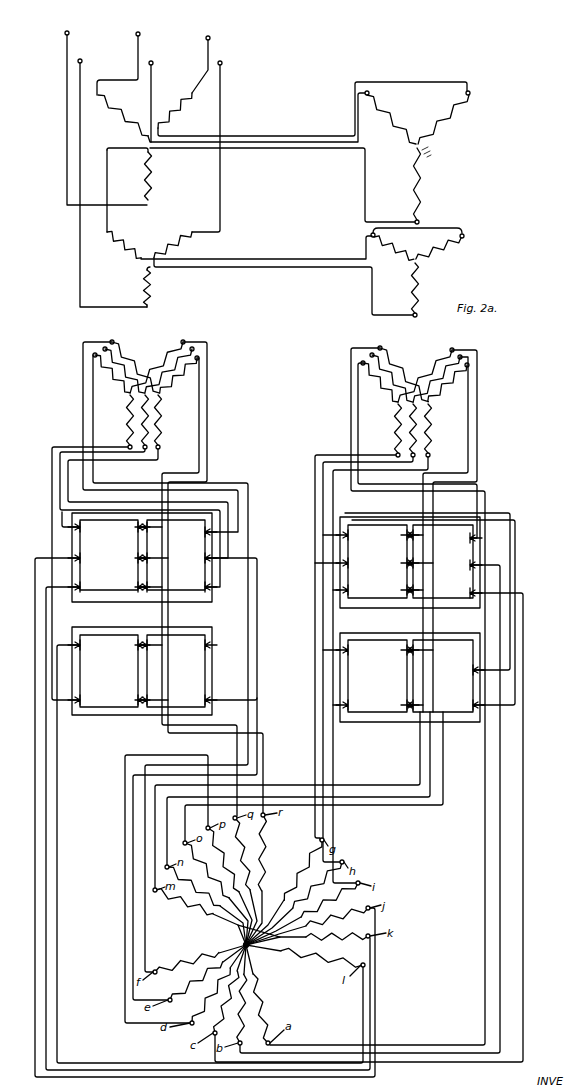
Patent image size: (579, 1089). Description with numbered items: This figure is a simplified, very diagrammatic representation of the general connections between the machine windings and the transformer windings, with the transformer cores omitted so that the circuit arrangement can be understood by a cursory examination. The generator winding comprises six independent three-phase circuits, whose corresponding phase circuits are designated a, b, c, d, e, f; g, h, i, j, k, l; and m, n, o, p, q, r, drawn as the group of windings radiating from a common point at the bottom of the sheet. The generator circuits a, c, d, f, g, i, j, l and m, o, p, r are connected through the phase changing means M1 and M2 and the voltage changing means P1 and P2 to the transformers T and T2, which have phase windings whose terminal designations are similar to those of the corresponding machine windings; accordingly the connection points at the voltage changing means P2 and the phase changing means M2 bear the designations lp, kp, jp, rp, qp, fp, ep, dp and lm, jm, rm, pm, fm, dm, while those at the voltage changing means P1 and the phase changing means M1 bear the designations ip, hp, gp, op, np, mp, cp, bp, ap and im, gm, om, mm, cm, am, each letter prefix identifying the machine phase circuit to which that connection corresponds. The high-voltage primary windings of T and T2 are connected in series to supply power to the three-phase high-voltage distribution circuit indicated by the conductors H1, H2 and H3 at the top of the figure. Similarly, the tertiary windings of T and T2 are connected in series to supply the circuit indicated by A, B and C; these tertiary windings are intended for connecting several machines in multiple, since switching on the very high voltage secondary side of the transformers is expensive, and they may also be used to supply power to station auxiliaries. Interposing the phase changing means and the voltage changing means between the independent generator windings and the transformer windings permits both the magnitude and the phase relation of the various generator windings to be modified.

The high-voltage distribution circuit conductor H1 is at (69, 33).
The high-voltage distribution circuit conductor H2 is at (140, 34).
The high-voltage distribution circuit conductor H3 is at (210, 38).
The tertiary circuit conductor A is at (82, 61).
The tertiary circuit conductor B is at (153, 63).
The tertiary circuit conductor C is at (222, 63).
The transformer T is at (281, 198).
The transformer T2 is at (418, 204).
The voltage changing means P1 is at (409, 574).
The voltage changing means P2 is at (142, 570).
The phase changing means M1 is at (410, 692).
The phase changing means M2 is at (142, 685).
The generator phase circuit a is at (361, 364).
The generator phase circuit b is at (371, 353).
The generator phase circuit c is at (382, 347).
The generator phase circuit d is at (93, 355).
The generator phase circuit e is at (105, 347).
The generator phase circuit f is at (113, 340).
The generator phase circuit g is at (396, 455).
The generator phase circuit h is at (413, 457).
The generator phase circuit i is at (430, 455).
The generator phase circuit j is at (128, 446).
The generator phase circuit k is at (145, 449).
The generator phase circuit l is at (160, 447).
The generator phase circuit m is at (452, 348).
The generator phase circuit n is at (462, 356).
The generator phase circuit o is at (467, 368).
The generator phase circuit p is at (183, 340).
The generator phase circuit q is at (193, 348).
The generator phase circuit r is at (197, 360).
The switch contact lp is at (85, 529).
The switch contact kp is at (87, 552).
The switch contact jp is at (85, 583).
The switch contact rp is at (134, 533).
The switch contact qp is at (129, 560).
The switch contact fp is at (198, 534).
The switch contact ep is at (196, 554).
The switch contact dp is at (199, 580).
The switch contact lm is at (87, 647).
The switch contact jm is at (87, 697).
The switch contact rm is at (128, 654).
The switch contact pm is at (128, 691).
The switch contact fm is at (198, 656).
The switch contact dm is at (198, 691).
The switch contact ip is at (353, 537).
The switch contact hp is at (356, 560).
The switch contact gp is at (356, 587).
The switch contact op is at (402, 543).
The switch contact np is at (400, 569).
The switch contact mp is at (399, 593).
The switch contact cp is at (463, 537).
The switch contact bp is at (464, 563).
The switch contact ap is at (464, 587).
The switch contact im is at (355, 652).
The switch contact gm is at (358, 705).
The switch contact om is at (400, 659).
The switch contact mm is at (399, 696).
The switch contact cm is at (466, 672).
The switch contact am is at (466, 700).